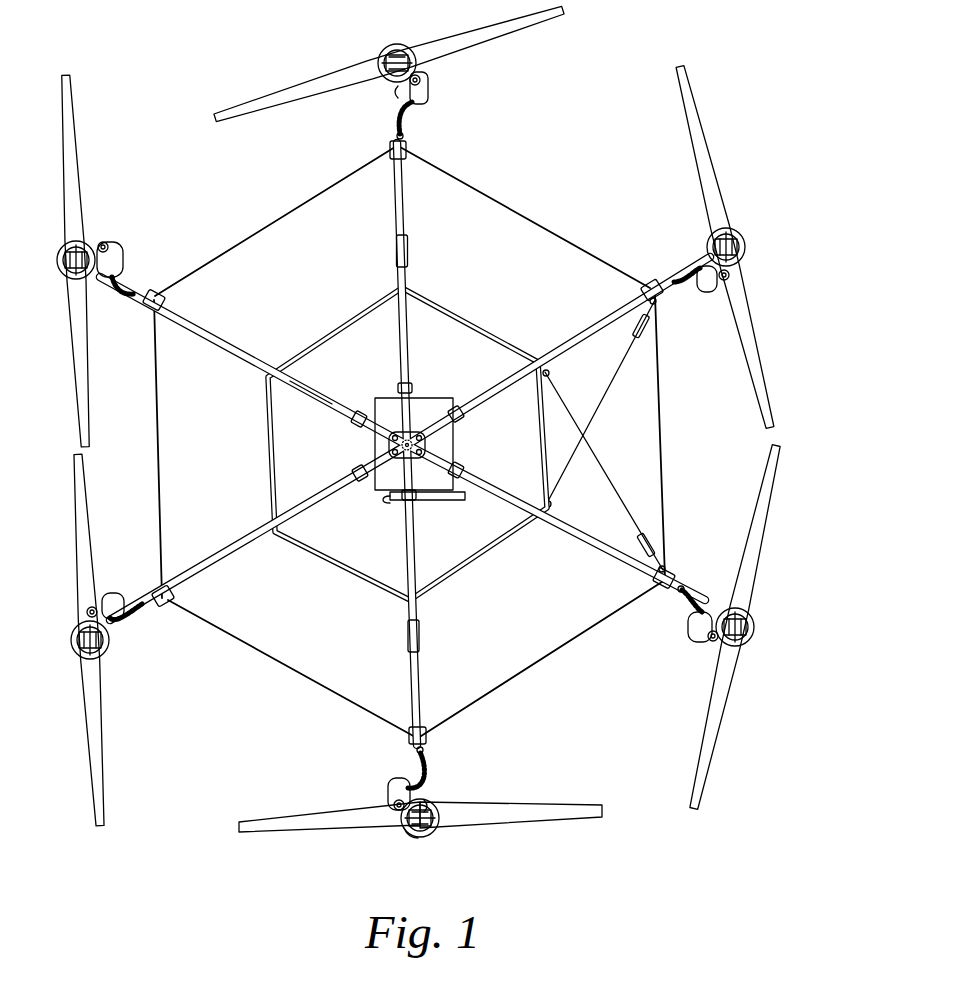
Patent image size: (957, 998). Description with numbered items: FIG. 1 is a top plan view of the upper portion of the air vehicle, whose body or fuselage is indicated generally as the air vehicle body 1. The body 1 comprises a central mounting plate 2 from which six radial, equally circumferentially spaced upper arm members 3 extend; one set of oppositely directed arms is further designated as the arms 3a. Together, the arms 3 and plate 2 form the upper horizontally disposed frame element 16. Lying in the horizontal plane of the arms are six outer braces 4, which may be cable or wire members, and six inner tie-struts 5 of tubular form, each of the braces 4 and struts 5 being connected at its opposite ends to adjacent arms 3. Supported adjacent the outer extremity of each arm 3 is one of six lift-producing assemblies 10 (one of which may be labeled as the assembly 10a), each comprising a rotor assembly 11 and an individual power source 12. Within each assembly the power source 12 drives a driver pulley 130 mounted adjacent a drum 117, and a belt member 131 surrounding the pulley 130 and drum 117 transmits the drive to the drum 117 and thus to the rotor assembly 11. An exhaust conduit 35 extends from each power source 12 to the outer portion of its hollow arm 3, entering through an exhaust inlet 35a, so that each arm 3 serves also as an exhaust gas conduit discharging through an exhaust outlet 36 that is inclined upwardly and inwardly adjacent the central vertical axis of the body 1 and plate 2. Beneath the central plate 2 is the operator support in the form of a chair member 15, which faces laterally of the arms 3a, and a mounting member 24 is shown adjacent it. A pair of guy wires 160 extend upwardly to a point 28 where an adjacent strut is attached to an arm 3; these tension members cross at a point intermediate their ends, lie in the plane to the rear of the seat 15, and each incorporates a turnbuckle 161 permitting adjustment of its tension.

The air vehicle body 1 is at (423, 426).
The central mounting plate 2 is at (392, 470).
The upper arm members 3 is at (405, 222).
The oppositely directed arms 3a is at (409, 250).
The outer braces 4 is at (271, 222).
The inner tie-struts 5 is at (332, 333).
The lift-producing assemblies 10 is at (54, 272).
The propulsion unit 10a is at (394, 40).
The rotor assembly 11 is at (326, 90).
The power source 12 is at (429, 100).
The chair member 15 is at (440, 445).
The upper frame element 16 is at (300, 398).
The mounting bar 24 is at (438, 502).
The attachment point 28 is at (652, 281).
The exhaust conduit 35 is at (396, 122).
The exhaust inlet 35a is at (405, 130).
The exhaust outlet 36 is at (403, 387).
The drum 117 is at (405, 838).
The driver pulley 130 is at (421, 82).
The belt member 131 is at (400, 93).
The guy wires 160 is at (606, 392).
The turnbuckle 161 is at (634, 334).